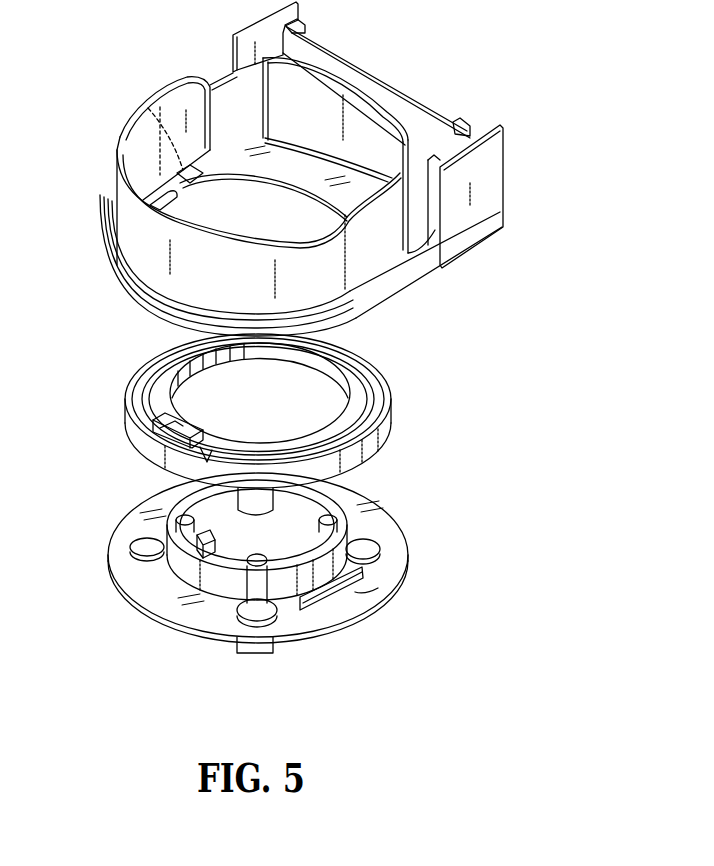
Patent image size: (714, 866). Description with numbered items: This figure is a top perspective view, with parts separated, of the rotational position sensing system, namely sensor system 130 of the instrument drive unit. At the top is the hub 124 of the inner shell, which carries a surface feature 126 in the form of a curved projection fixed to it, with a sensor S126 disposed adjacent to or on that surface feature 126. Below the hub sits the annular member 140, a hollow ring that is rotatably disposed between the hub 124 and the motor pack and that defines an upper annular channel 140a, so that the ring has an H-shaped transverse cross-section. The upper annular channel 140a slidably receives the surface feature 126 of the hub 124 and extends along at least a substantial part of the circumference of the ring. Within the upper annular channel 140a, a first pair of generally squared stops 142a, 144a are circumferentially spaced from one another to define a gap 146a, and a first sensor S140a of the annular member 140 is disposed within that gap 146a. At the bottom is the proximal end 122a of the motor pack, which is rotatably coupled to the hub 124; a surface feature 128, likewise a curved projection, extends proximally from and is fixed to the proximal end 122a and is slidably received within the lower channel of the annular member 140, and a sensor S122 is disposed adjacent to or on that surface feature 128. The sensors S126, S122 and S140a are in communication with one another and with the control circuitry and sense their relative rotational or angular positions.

The hub 124 is at (490, 201).
The surface feature 126 is at (117, 140).
The sensor S126 is at (150, 106).
The sensor system 130 is at (335, 337).
The annular member 140 is at (265, 456).
The upper annular channel 140a is at (366, 377).
The stop 142a is at (165, 418).
The gap 146a is at (200, 437).
The first sensor S140a is at (157, 424).
The stop 144a is at (207, 447).
The proximal end 122a is at (319, 572).
The sensor S122 is at (370, 588).
The surface feature 128 is at (343, 597).